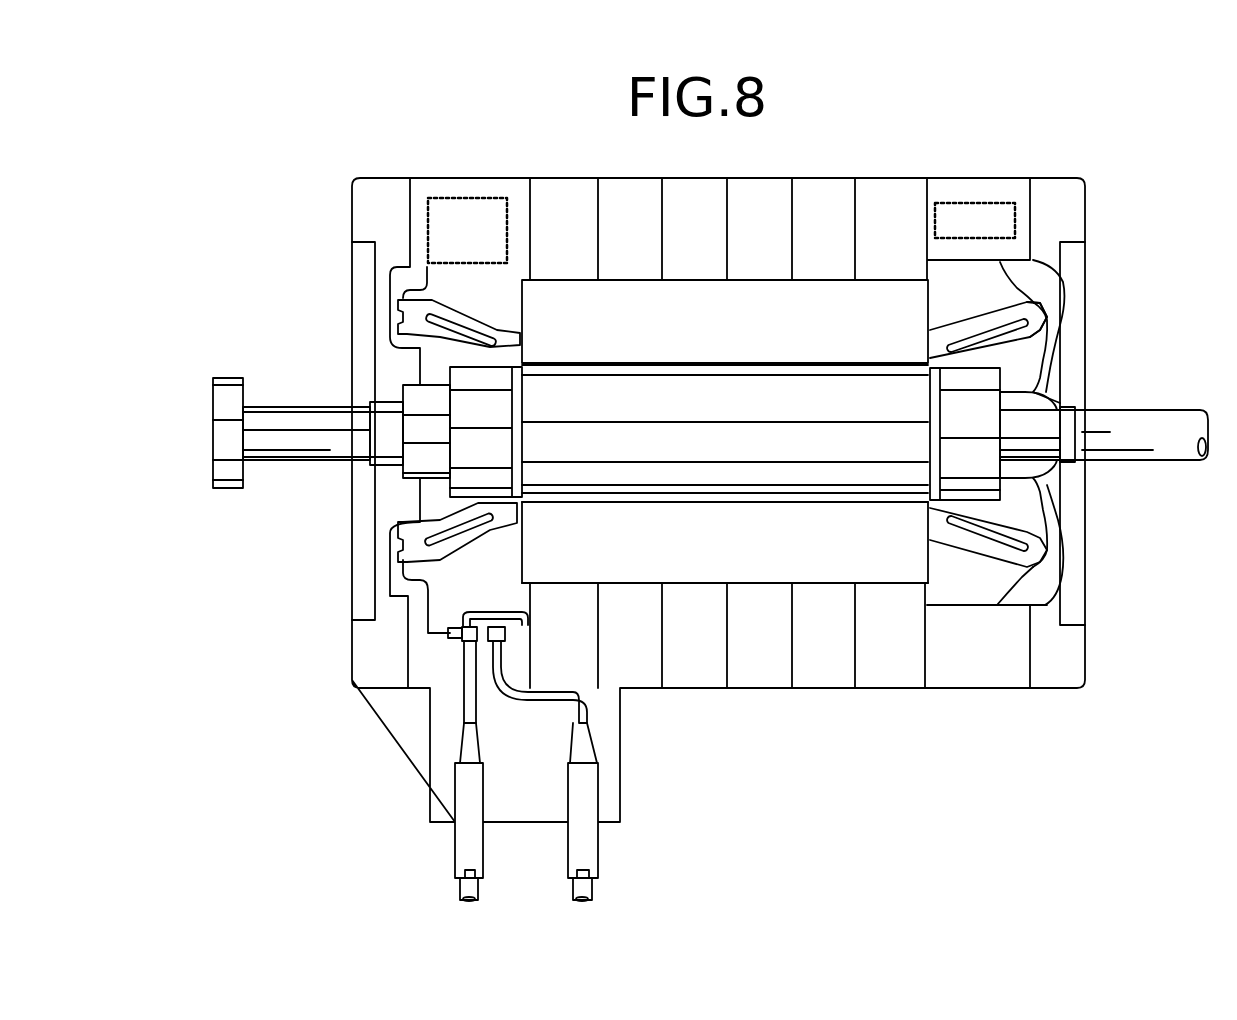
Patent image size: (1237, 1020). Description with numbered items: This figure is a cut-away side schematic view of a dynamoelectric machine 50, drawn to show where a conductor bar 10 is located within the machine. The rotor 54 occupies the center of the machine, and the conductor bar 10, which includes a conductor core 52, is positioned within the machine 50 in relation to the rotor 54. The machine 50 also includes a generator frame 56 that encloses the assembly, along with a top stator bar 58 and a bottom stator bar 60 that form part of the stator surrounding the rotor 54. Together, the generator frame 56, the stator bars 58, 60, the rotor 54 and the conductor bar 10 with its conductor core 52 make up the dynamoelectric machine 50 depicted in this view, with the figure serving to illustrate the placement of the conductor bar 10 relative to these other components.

The conductor bar 10 is at (872, 553).
The dynamoelectric machine 50 is at (293, 283).
The conductor core 52 is at (785, 520).
The rotor 54 is at (570, 447).
The generator frame 56 is at (862, 650).
The top stator bar 58 is at (947, 512).
The bottom stator bar 60 is at (938, 527).